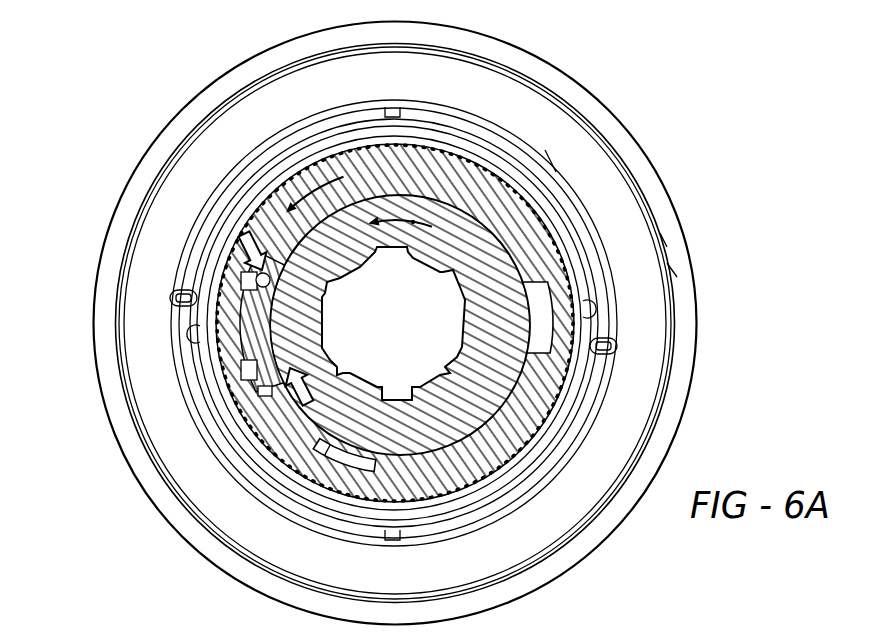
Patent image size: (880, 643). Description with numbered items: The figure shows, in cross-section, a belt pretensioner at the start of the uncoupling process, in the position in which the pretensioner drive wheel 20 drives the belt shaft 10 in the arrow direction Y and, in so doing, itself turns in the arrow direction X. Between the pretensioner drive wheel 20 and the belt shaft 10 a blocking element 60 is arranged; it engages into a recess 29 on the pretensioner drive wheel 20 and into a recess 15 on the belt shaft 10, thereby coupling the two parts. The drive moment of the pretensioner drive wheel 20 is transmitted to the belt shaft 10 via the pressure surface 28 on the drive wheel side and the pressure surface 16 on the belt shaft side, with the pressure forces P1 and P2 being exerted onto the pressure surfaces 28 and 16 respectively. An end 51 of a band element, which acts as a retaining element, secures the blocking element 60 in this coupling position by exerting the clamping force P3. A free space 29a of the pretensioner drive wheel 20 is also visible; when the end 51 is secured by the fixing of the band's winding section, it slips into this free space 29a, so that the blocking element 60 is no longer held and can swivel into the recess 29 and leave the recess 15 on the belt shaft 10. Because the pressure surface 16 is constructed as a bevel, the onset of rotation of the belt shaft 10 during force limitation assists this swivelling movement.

The belt shaft 10 is at (483, 272).
The recess 15 is at (240, 312).
The pressure surface 16 is at (243, 349).
The pretensioner drive wheel 20 is at (497, 200).
The pressure surface 28 is at (255, 285).
The recess 29 is at (238, 332).
The free space 29a is at (377, 458).
The end 51 is at (265, 392).
The blocking element 60 is at (250, 288).
The pressure force P1 is at (250, 225).
The pressure force P2 is at (290, 400).
The clamping force P3 is at (243, 367).
The arrow direction X is at (307, 177).
The arrow direction Y is at (413, 222).